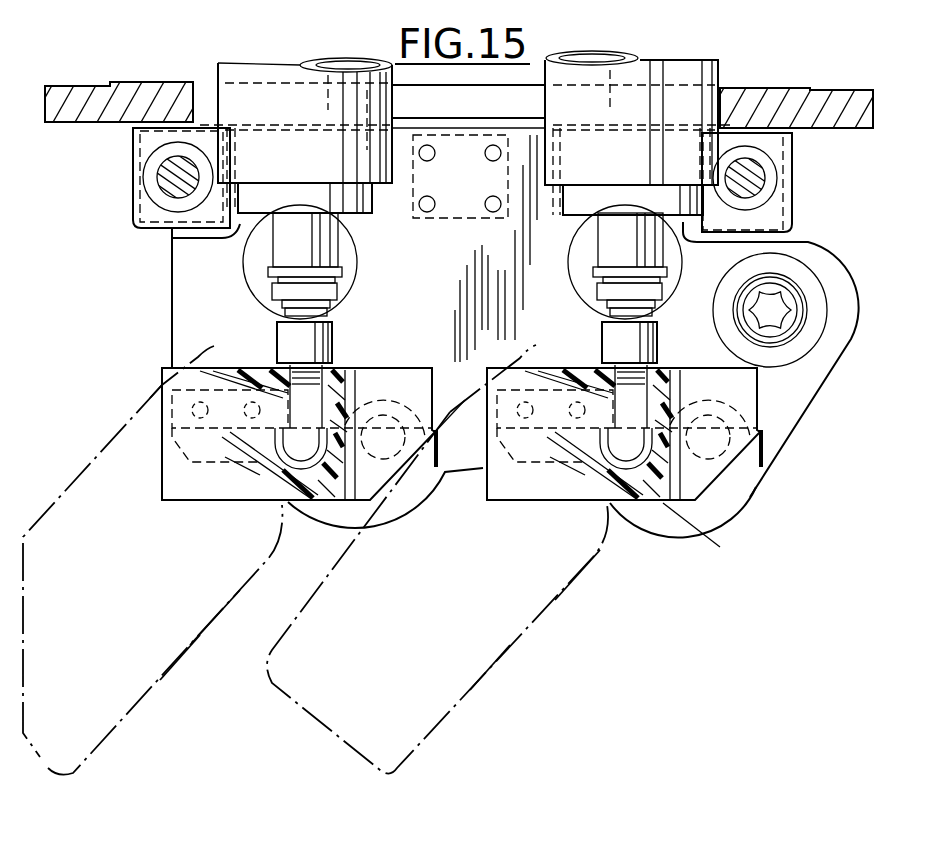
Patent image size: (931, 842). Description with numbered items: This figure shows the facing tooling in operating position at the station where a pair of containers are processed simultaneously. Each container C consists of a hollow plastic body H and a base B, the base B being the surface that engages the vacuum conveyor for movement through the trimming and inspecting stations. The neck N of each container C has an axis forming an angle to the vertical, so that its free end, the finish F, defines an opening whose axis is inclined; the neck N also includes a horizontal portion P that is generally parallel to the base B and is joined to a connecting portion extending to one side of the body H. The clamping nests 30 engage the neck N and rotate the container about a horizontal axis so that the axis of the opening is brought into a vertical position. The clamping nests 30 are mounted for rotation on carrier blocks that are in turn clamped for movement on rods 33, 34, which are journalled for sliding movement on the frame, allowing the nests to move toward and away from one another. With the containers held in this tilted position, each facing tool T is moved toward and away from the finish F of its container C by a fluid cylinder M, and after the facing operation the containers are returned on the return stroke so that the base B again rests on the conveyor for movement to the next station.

The clamping nest 30 is at (390, 370).
The rod 33 is at (742, 194).
The rod 34 is at (160, 178).
The fluid cylinder M is at (326, 74).
The facing tool T is at (333, 336).
The finish F is at (277, 337).
The horizontal portion P is at (353, 363).
The base B is at (46, 782).
The hollow plastic body H is at (217, 614).
The container C is at (178, 662).
The neck N is at (720, 547).